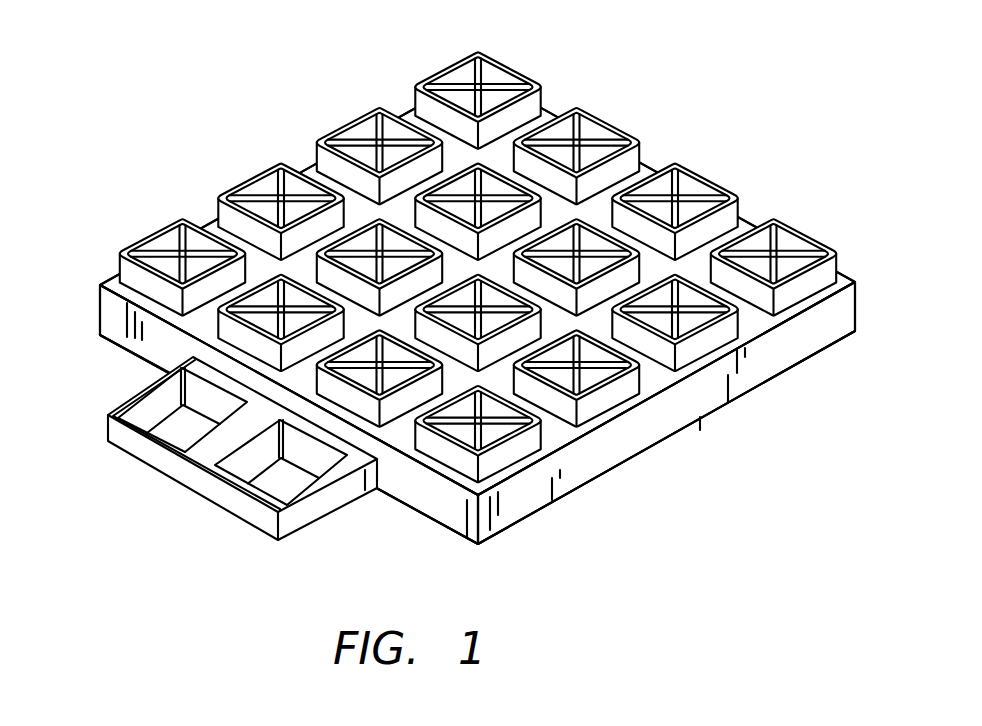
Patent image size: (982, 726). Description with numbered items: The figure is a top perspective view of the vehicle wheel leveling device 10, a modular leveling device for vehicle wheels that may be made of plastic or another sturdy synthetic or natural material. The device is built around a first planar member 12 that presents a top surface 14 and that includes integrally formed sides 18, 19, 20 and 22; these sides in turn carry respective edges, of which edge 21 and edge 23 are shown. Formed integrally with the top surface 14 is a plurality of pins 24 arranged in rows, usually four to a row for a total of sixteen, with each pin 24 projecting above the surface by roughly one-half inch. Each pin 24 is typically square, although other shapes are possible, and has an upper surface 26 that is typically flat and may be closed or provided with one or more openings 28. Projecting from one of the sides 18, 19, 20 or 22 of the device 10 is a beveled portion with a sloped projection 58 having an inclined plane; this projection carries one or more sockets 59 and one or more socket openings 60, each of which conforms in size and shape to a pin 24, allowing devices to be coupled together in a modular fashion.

The vehicle wheel leveling device 10 is at (688, 98).
The first planar member 12 is at (853, 335).
The top surface 14 is at (562, 440).
The side 18 is at (688, 410).
The side 19 is at (420, 495).
The side 20 is at (118, 268).
The edge 21 is at (522, 526).
The side 22 is at (560, 86).
The edge 23 is at (120, 354).
The pin 24 is at (790, 225).
The upper surface 26 is at (345, 130).
The opening 28 is at (463, 73).
The sloped projection 58 is at (255, 520).
The socket 59 is at (180, 422).
The socket opening 60 is at (275, 478).